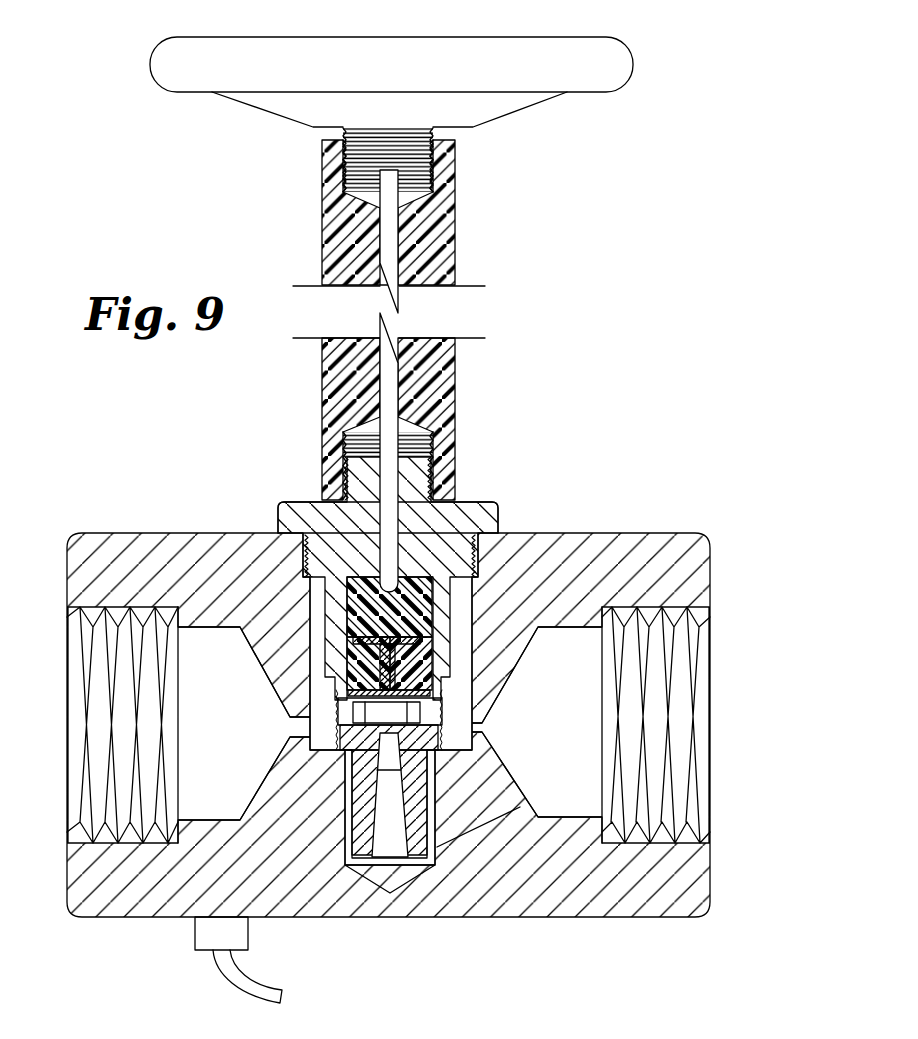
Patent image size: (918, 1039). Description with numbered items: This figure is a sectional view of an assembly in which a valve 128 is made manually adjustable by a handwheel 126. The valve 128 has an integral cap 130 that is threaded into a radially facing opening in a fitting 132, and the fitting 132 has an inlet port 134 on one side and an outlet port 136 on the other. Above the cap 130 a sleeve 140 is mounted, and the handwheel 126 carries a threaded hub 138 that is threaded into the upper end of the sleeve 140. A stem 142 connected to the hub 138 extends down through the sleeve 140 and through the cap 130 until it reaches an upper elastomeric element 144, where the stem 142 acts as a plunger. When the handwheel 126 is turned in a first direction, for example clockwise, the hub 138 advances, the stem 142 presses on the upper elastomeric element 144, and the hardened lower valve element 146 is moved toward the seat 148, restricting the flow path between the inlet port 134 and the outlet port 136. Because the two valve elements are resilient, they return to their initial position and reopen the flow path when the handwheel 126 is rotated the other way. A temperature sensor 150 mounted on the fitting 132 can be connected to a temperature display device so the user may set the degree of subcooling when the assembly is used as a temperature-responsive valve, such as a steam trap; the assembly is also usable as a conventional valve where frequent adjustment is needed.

The handwheel 126 is at (622, 90).
The valve 128 is at (435, 562).
The cap 130 is at (305, 500).
The fitting 132 is at (156, 533).
The inlet port 134 is at (67, 696).
The outlet port 136 is at (710, 681).
The threaded hub 138 is at (433, 130).
The sleeve 140 is at (455, 227).
The stem 142 is at (387, 387).
The upper elastomeric element 144 is at (417, 600).
The hardened lower valve element 146 is at (427, 663).
The seat 148 is at (370, 722).
The temperature sensor 150 is at (195, 932).